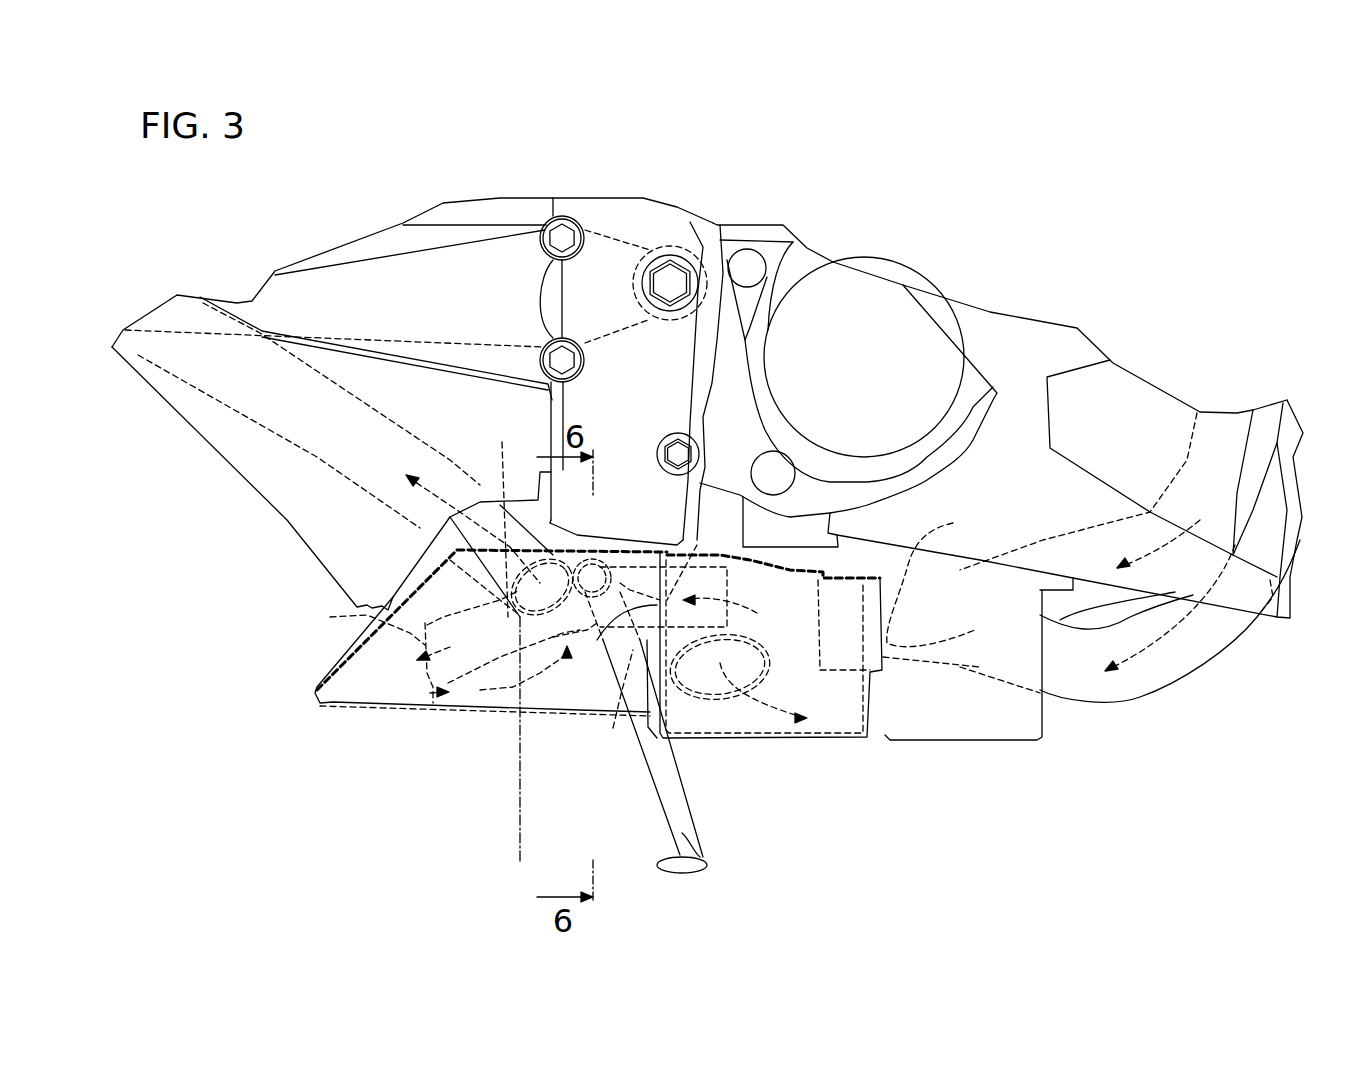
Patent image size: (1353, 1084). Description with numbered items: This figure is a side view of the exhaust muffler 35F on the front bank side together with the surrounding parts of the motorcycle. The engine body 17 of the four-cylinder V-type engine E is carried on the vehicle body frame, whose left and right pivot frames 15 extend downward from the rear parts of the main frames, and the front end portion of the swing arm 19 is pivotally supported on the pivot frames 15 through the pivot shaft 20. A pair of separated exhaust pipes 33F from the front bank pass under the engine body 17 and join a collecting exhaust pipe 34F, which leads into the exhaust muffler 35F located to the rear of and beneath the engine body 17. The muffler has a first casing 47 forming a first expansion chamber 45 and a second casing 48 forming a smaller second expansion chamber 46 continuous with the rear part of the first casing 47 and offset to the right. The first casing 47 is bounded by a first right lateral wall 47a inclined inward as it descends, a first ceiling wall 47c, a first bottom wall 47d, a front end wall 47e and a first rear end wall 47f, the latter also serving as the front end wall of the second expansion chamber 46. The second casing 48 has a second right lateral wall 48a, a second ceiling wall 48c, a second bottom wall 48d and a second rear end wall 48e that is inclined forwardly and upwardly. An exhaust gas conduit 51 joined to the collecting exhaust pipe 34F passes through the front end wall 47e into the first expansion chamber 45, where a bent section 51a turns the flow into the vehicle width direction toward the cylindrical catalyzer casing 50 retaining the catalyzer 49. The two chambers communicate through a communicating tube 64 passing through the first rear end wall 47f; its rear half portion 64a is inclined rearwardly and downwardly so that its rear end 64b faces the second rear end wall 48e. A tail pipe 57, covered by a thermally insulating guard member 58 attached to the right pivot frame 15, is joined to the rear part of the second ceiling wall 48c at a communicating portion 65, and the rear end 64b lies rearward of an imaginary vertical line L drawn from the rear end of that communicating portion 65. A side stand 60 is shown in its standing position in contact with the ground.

The pivot frame 15 is at (692, 222).
The engine body 17 is at (723, 397).
The swing arm 19 is at (433, 230).
The pivot shaft 20 is at (679, 275).
The separated exhaust pipes 33F is at (1133, 600).
The collecting exhaust pipe 34F is at (944, 577).
The exhaust muffler 35F is at (796, 577).
The first expansion chamber 45 is at (825, 740).
The second expansion chamber 46 is at (435, 665).
The first casing 47 is at (858, 747).
The first right lateral wall 47a is at (853, 713).
The first ceiling wall 47c is at (840, 578).
The first bottom wall 47d is at (737, 742).
The front end wall 47e is at (810, 628).
The first rear end wall 47f is at (540, 675).
The second casing 48 is at (548, 717).
The second right lateral wall 48a is at (370, 692).
The second ceiling wall 48c is at (585, 550).
The second bottom wall 48d is at (477, 713).
The second rear end wall 48e is at (332, 675).
The catalyzer 49 is at (717, 665).
The catalyzer casing 50 is at (700, 707).
The exhaust gas conduit 51 is at (740, 583).
The bent section 51a is at (873, 673).
The tail pipe 57 is at (317, 457).
The thermally insulating guard member 58 is at (398, 385).
The side stand 60 is at (687, 810).
The communicating tube 64 is at (533, 615).
The rear half portion 64a is at (494, 517).
The rear end 64b is at (405, 646).
The communicating portion 65 is at (556, 598).
The engine E is at (710, 358).
The imaginary vertical line L is at (395, 593).